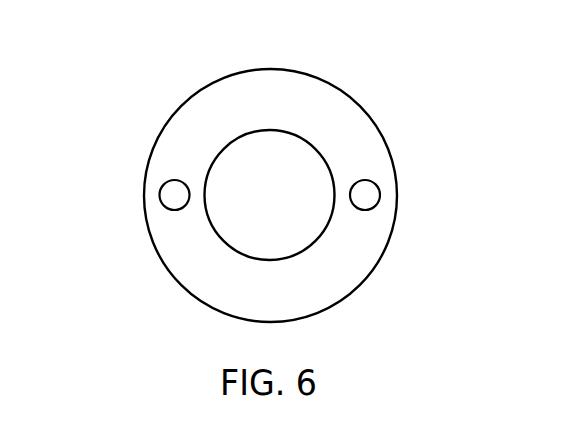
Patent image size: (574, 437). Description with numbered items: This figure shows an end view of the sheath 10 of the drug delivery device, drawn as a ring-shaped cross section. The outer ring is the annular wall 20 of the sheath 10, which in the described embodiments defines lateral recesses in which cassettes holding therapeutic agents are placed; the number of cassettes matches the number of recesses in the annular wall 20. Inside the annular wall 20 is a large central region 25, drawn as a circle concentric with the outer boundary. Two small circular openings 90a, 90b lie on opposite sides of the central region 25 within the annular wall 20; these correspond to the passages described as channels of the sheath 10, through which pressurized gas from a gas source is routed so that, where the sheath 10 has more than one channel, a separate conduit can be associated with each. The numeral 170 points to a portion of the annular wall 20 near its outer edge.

The sheath 10 is at (160, 75).
The annular wall 20 is at (355, 118).
The central aperture 25 is at (227, 175).
The mounting hole 90a is at (163, 193).
The mounting hole 90b is at (373, 203).
The outer surface 170 is at (412, 233).